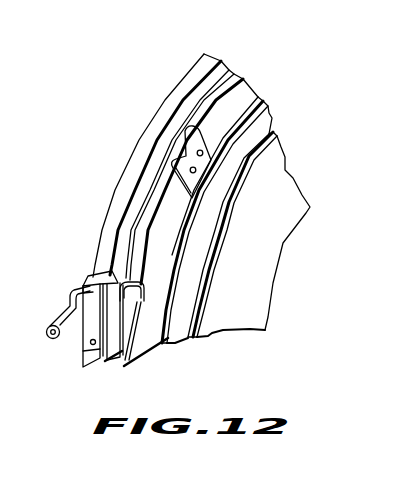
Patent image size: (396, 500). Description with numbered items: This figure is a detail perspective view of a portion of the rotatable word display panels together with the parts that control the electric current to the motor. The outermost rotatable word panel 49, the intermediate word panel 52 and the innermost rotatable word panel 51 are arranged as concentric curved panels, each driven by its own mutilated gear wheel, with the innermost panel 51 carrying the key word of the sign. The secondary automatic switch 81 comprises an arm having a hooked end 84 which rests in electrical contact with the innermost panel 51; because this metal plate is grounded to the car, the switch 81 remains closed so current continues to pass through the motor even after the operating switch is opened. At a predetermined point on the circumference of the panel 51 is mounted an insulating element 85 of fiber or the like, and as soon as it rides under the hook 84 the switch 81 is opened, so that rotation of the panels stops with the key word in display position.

The outermost rotatable word panel 49 is at (282, 190).
The innermost rotatable word panel 51 is at (124, 369).
The intermediate word panel 52 is at (258, 127).
The secondary automatic switch 81 is at (80, 288).
The hooked end 84 is at (144, 284).
The insulating element 85 is at (187, 143).